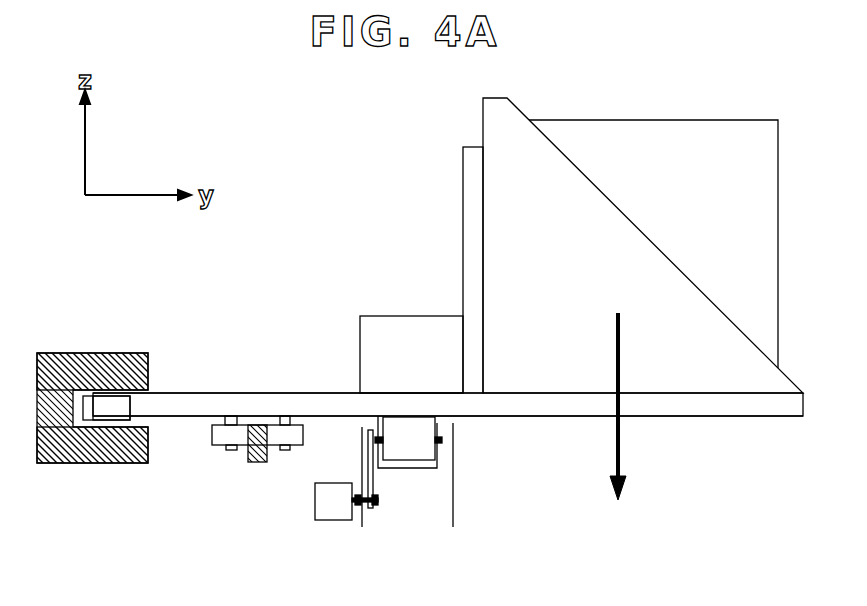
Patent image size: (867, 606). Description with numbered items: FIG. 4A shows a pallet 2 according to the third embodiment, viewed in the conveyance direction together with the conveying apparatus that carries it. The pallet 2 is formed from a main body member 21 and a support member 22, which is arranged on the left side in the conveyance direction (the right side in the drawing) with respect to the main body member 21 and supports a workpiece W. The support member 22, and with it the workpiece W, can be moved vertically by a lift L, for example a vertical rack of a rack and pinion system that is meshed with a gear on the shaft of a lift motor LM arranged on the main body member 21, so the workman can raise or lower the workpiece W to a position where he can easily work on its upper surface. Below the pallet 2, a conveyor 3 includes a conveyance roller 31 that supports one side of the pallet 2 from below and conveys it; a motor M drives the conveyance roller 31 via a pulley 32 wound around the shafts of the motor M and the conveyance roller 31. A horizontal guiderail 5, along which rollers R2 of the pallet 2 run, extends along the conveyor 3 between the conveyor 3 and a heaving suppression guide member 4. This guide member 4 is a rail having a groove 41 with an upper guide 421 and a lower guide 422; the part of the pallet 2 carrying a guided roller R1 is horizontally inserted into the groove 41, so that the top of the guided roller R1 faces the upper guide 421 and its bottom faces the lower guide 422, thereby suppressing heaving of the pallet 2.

The workpiece W is at (620, 120).
The lift L is at (463, 241).
The motor LM is at (413, 316).
The pallet 2 is at (296, 382).
The main body member 21 is at (246, 393).
The support member 22 is at (578, 418).
The heaving suppression guide member 4 is at (57, 342).
The upper guide 421 is at (118, 382).
The lower guide 422 is at (96, 430).
The groove 41 is at (146, 421).
The guided roller R1 is at (132, 404).
The roller R2 is at (213, 448).
The horizontal guiderail 5 is at (253, 463).
The conveyor 3 is at (413, 504).
The conveyance roller 31 is at (413, 463).
The pulley 32 is at (368, 505).
The motor M is at (333, 520).